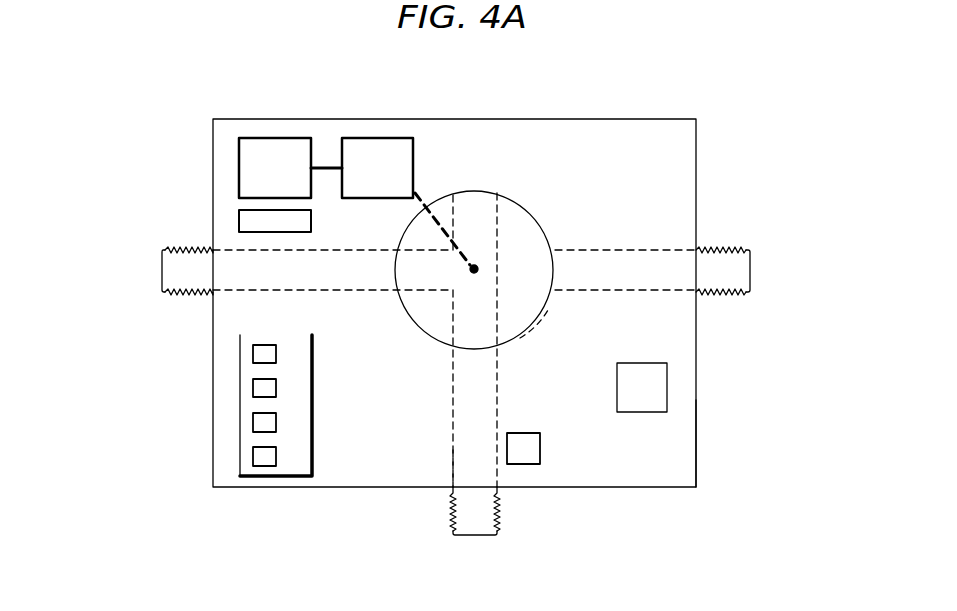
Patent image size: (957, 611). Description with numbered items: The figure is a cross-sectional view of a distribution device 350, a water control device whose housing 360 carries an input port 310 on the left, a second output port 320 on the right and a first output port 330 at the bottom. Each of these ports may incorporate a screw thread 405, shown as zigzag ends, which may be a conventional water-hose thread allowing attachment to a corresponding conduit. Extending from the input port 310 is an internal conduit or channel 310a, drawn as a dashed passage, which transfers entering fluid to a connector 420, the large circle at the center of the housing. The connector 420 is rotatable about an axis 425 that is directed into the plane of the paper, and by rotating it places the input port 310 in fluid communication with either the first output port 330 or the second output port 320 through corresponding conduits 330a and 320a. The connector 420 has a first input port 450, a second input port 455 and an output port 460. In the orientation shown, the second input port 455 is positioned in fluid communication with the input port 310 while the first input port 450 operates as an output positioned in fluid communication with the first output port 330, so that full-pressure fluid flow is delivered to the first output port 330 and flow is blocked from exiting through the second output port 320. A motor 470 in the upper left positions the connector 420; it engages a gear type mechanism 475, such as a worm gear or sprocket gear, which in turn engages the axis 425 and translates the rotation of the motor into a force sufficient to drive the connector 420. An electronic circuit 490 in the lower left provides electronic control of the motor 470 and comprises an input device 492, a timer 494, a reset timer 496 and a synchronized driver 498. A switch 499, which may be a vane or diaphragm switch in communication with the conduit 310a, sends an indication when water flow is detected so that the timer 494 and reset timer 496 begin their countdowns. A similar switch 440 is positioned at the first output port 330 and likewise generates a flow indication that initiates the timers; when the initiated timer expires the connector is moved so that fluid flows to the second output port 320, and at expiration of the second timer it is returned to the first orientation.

The distribution device 350 is at (537, 72).
The housing 360 is at (700, 417).
The input port 310 is at (160, 268).
The internal conduit or channel 310a is at (252, 277).
The second output port 320 is at (750, 277).
The conduit 320a is at (677, 283).
The first output port 330 is at (470, 537).
The conduit 330a is at (463, 451).
The screw thread 405 is at (170, 248).
The connector 420 is at (545, 227).
The axis 425 is at (474, 277).
The switch 440 is at (542, 455).
The first input port 450 is at (497, 332).
The second input port 455 is at (417, 277).
The output port 460 is at (475, 203).
The motor 470 is at (267, 138).
The gear type mechanism 475 is at (377, 138).
The electronic circuit 490 is at (257, 478).
The input device 492 is at (253, 352).
The timer 494 is at (253, 386).
The reset timer 496 is at (253, 420).
The synchronized driver 498 is at (253, 455).
The switch 499 is at (238, 222).